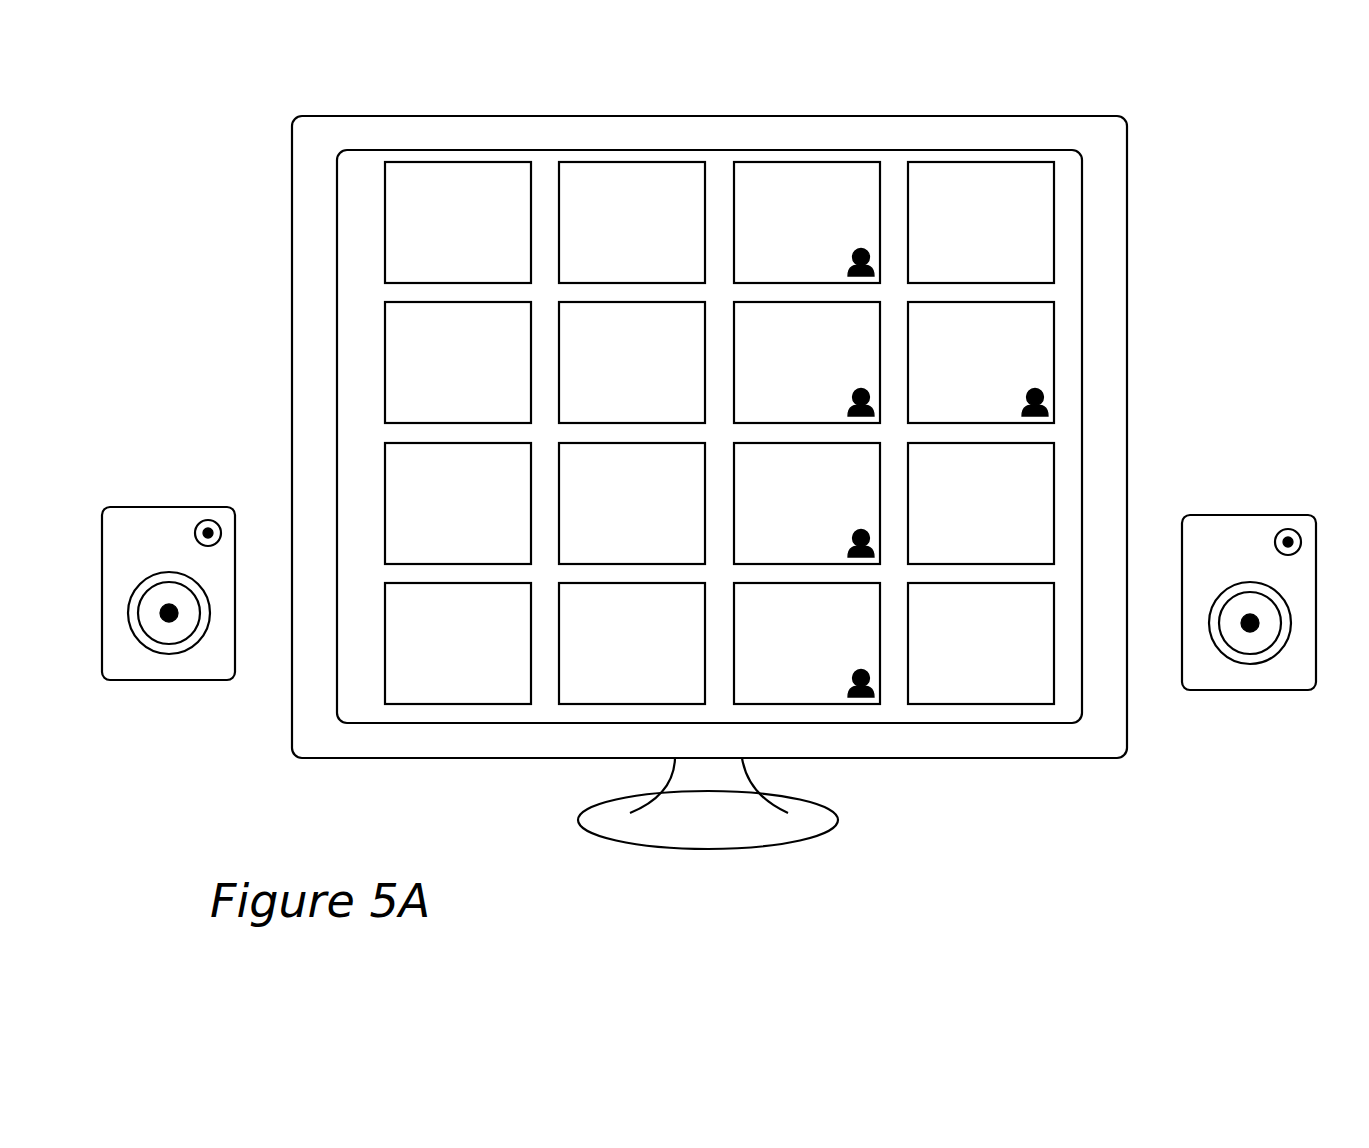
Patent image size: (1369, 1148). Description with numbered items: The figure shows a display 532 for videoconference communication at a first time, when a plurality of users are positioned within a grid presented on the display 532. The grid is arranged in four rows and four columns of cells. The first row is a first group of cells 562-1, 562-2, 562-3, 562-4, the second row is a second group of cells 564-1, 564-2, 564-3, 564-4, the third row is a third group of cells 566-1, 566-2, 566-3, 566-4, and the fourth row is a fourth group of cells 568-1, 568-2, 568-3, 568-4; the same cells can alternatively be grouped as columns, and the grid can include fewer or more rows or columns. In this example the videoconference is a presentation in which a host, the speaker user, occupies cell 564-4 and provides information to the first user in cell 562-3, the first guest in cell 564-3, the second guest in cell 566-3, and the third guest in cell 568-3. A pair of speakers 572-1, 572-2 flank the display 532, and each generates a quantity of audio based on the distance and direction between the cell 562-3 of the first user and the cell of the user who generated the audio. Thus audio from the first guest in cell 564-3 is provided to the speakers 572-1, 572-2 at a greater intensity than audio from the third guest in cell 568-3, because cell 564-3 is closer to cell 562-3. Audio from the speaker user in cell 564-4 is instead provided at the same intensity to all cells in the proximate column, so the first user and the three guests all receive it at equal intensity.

The display 532 is at (1018, 116).
The cell 562-1 is at (429, 190).
The cell 562-2 is at (603, 190).
The cell 562-3 is at (778, 190).
The cell 562-4 is at (952, 190).
The cell 564-1 is at (429, 330).
The cell 564-2 is at (603, 330).
The cell 564-3 is at (778, 330).
The cell 564-4 is at (952, 330).
The cell 566-1 is at (429, 471).
The cell 566-2 is at (603, 471).
The cell 566-3 is at (778, 471).
The cell 566-4 is at (952, 471).
The cell 568-1 is at (429, 611).
The cell 568-2 is at (603, 611).
The cell 568-3 is at (778, 611).
The cell 568-4 is at (952, 611).
The speaker 572-1 is at (165, 507).
The speaker 572-2 is at (1233, 515).